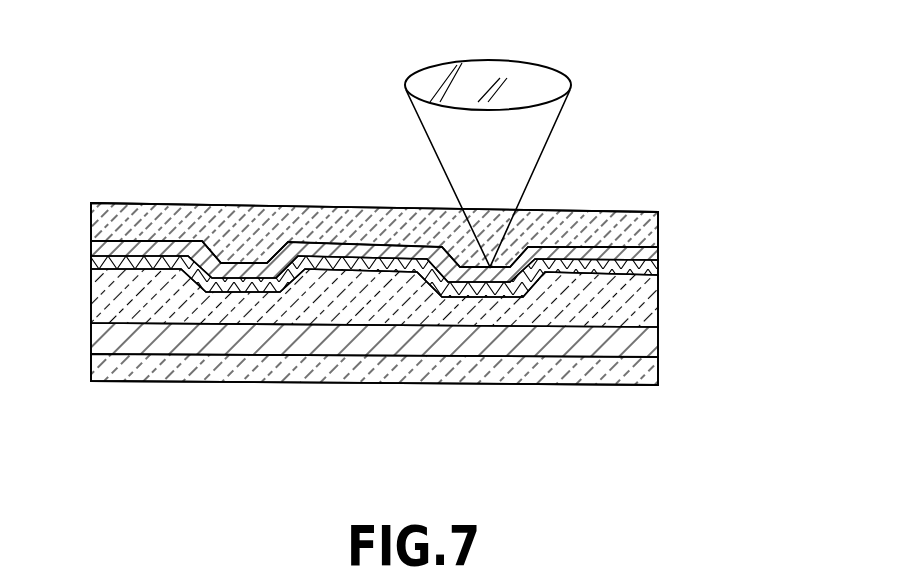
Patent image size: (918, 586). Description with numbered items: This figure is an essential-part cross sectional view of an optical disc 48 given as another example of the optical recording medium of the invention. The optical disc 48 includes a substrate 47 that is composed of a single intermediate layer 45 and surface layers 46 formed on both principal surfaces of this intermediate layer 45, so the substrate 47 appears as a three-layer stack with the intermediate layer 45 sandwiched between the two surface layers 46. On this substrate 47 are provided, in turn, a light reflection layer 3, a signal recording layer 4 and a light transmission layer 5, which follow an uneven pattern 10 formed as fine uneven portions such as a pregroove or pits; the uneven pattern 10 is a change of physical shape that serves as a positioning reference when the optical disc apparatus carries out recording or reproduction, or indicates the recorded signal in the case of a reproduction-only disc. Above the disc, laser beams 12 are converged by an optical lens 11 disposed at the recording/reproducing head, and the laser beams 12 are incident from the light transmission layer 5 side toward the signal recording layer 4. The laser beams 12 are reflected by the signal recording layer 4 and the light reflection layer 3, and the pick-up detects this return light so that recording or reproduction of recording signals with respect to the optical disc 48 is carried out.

The light reflection layer 3 is at (660, 266).
The signal recording layer 4 is at (660, 247).
The light transmission layer 5 is at (660, 211).
The uneven pattern 10 is at (494, 282).
The optical lens 11 is at (513, 80).
The laser beams 12 is at (507, 148).
The intermediate layer 45 is at (660, 342).
The surface layers 46 is at (660, 304).
The substrate 47 is at (443, 331).
The optical disc 48 is at (443, 239).